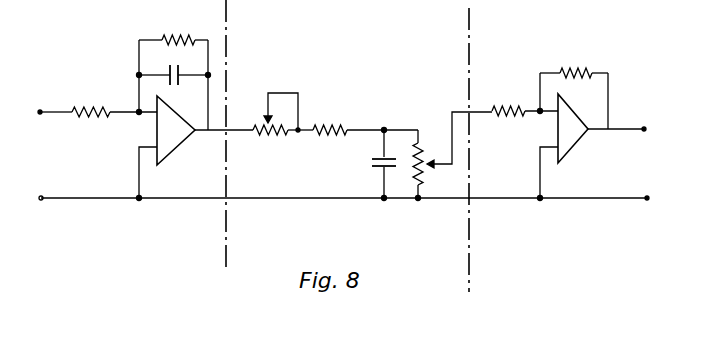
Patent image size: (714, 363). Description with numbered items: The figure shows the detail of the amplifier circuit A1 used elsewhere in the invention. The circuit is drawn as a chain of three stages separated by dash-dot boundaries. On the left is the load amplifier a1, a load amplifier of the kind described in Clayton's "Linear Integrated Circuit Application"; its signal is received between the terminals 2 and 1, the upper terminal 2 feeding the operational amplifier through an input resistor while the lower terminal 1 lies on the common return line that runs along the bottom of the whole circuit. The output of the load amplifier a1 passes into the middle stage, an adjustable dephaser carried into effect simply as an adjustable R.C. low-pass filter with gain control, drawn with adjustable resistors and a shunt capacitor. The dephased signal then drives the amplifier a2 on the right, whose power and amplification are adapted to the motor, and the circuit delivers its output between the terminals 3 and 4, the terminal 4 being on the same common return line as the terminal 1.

The input terminal (ground/reference) 1 is at (42, 184).
The input terminal 2 is at (40, 99).
The output terminal 3 is at (651, 117).
The output terminal (ground/reference) 4 is at (652, 186).
The load amplifier a1 is at (144, 140).
The amplifier a2 is at (576, 157).